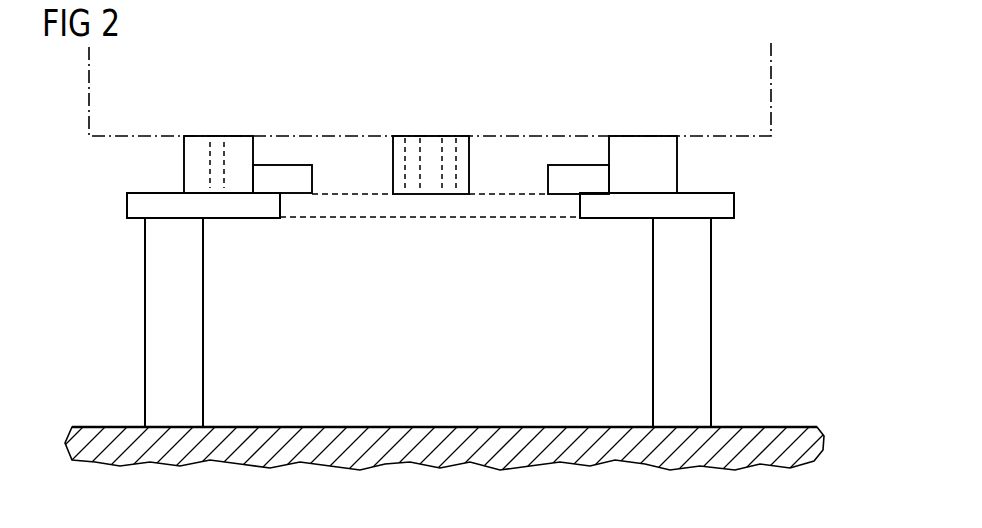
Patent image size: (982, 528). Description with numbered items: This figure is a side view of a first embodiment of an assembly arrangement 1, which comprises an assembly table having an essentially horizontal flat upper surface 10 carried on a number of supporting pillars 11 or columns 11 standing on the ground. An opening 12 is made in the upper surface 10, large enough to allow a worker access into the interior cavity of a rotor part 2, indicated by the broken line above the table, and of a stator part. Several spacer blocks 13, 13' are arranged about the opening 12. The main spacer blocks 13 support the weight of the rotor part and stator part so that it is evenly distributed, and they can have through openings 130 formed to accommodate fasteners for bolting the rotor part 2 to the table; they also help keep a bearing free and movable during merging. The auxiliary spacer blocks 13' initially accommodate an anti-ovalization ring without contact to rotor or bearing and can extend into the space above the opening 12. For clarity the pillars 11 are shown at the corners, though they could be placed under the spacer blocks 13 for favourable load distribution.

The assembly arrangement 1 is at (775, 222).
The rotor part 2 is at (89, 93).
The upper surface 10 is at (704, 202).
The supporting pillars 11 is at (155, 333).
The opening 12 is at (282, 198).
The main spacer blocks 13 is at (404, 142).
The auxiliary spacer blocks 13' is at (431, 176).
The through openings 130 is at (218, 141).